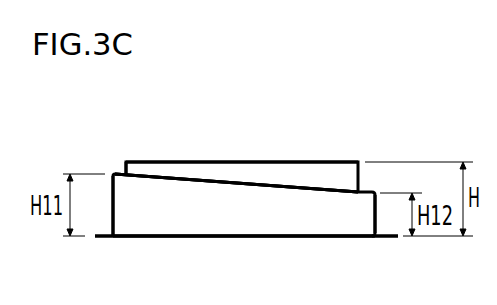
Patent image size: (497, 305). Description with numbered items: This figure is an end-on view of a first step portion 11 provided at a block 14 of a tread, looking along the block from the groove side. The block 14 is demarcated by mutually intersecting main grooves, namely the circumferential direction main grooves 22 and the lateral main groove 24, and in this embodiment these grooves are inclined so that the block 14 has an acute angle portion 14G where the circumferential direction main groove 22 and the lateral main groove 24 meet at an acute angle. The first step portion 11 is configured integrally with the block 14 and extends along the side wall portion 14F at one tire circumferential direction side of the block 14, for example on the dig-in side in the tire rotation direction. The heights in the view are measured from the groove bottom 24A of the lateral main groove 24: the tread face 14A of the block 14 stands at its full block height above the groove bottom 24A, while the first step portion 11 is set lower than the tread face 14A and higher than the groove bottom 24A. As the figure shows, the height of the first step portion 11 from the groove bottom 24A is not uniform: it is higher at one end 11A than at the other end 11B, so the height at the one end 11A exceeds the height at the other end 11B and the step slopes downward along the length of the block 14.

The first step portion 11 is at (187, 162).
The one end 11A is at (112, 173).
The other end 11B is at (365, 190).
The block 14 is at (232, 161).
The tread face 14A is at (270, 160).
The side wall portion 14F is at (233, 230).
The acute angle portion 14G is at (132, 161).
The circumferential direction main groove 22 is at (92, 200).
The lateral main groove 24 is at (289, 216).
The groove bottom 24A is at (250, 236).